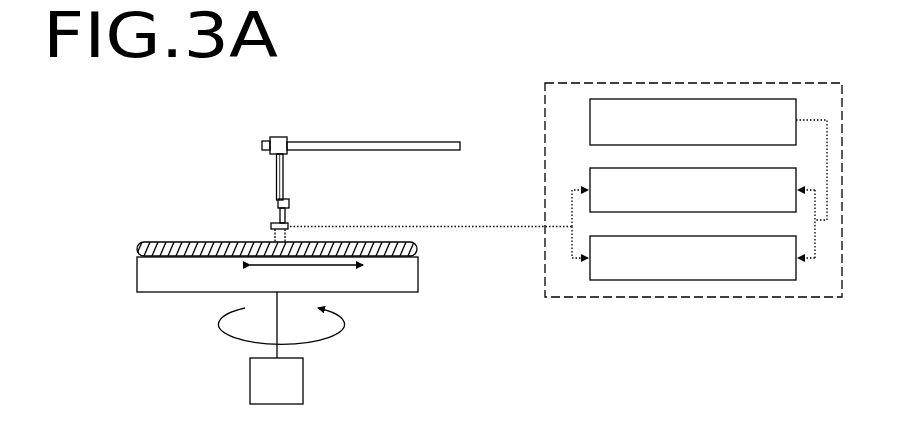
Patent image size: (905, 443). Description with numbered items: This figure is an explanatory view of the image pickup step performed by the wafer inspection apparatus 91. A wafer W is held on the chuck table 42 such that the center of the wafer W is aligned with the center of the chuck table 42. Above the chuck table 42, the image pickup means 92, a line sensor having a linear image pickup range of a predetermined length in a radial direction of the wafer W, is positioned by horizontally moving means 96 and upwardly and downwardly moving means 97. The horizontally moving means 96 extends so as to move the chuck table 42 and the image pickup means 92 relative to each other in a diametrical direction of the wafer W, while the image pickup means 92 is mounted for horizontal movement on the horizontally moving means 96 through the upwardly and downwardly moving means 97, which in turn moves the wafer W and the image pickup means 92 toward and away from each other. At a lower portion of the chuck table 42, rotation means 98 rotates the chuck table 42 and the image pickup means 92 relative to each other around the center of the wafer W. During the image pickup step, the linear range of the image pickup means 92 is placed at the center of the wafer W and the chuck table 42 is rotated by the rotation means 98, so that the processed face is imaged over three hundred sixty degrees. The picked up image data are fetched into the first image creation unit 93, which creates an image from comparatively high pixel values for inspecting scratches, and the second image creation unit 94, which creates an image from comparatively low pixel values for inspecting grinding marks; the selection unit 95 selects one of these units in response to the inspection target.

The wafer inspection apparatus 91 is at (209, 137).
The horizontally moving means 96 is at (402, 140).
The upwardly and downwardly moving means 97 is at (285, 173).
The image pickup means 92 is at (277, 219).
The wafer W is at (402, 243).
The chuck table 42 is at (413, 280).
The rotation means 98 is at (300, 381).
The selection unit 95 is at (589, 108).
The first image creation unit 93 is at (608, 167).
The second image creation unit 94 is at (617, 235).